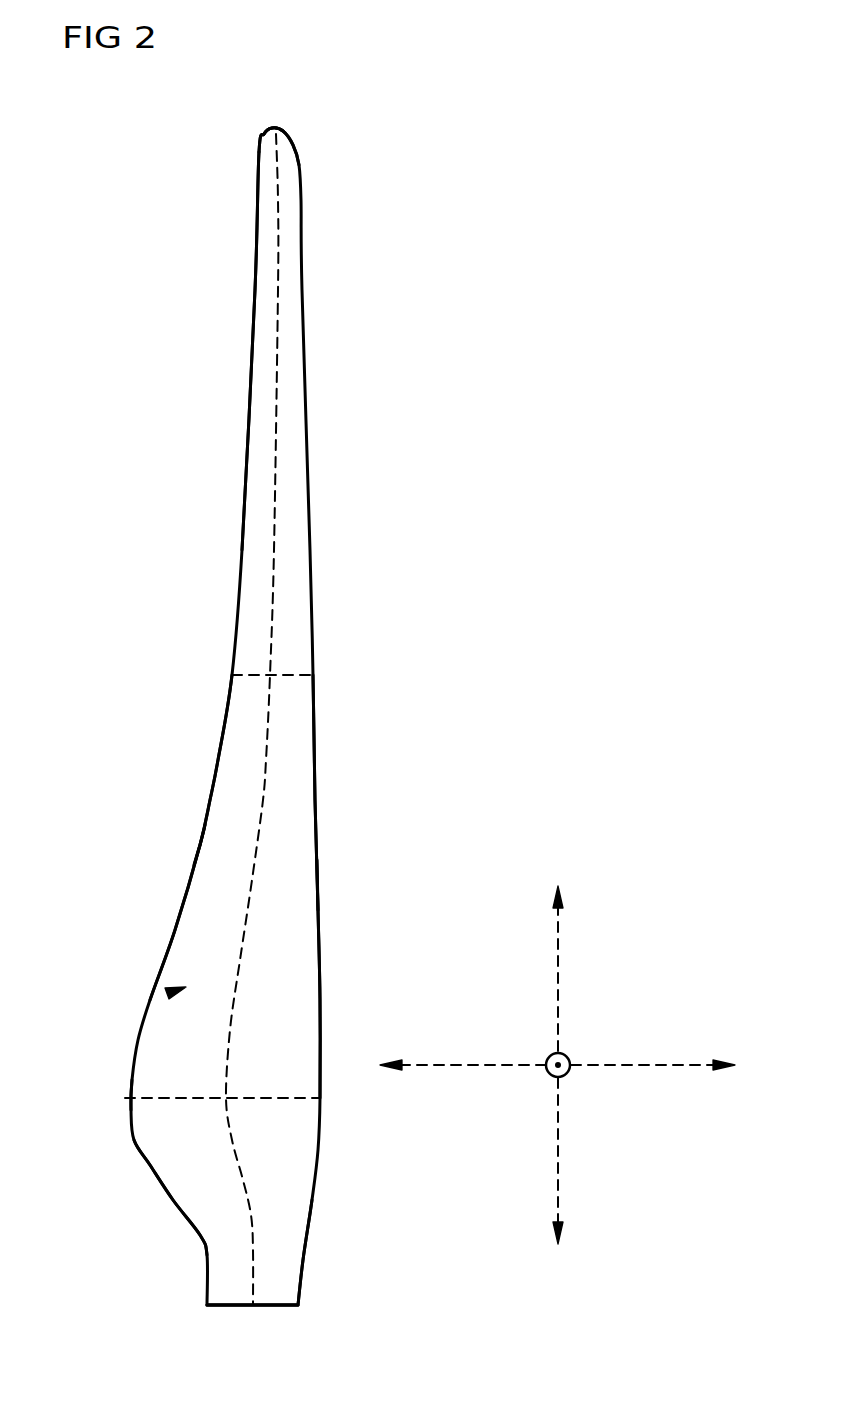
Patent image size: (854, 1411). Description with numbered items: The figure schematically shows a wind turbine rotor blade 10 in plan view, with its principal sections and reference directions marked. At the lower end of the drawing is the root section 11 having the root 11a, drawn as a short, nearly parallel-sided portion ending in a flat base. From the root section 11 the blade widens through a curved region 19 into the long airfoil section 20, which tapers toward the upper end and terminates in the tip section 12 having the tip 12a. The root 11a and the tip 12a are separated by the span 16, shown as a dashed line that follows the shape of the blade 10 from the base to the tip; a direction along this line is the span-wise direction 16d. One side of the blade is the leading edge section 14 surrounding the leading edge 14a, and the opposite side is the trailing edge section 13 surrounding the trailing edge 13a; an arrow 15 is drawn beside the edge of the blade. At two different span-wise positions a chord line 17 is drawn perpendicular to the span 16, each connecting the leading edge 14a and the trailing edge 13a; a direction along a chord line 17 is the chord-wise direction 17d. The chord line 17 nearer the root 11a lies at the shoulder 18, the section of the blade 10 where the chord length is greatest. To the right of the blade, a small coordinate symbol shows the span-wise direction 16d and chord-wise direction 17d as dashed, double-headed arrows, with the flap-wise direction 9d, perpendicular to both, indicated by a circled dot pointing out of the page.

The rotor blade 10 is at (414, 466).
The root section 11 is at (295, 1263).
The root 11a is at (245, 1308).
The tip section 12 is at (273, 146).
The tip 12a is at (271, 129).
The trailing edge section 13 is at (226, 778).
The trailing edge 13a is at (202, 843).
The leading edge section 14 is at (303, 822).
The leading edge 14a is at (318, 875).
The rotation direction 15 is at (170, 992).
The span 16 is at (268, 762).
The chord line 17 is at (285, 673).
The shoulder 18 is at (128, 1098).
The transition section 19 is at (190, 1195).
The airfoil section 20 is at (248, 582).
The flap-wise direction 9d is at (569, 1057).
The span-wise direction 16d is at (559, 965).
The chord-wise direction 17d is at (676, 1064).